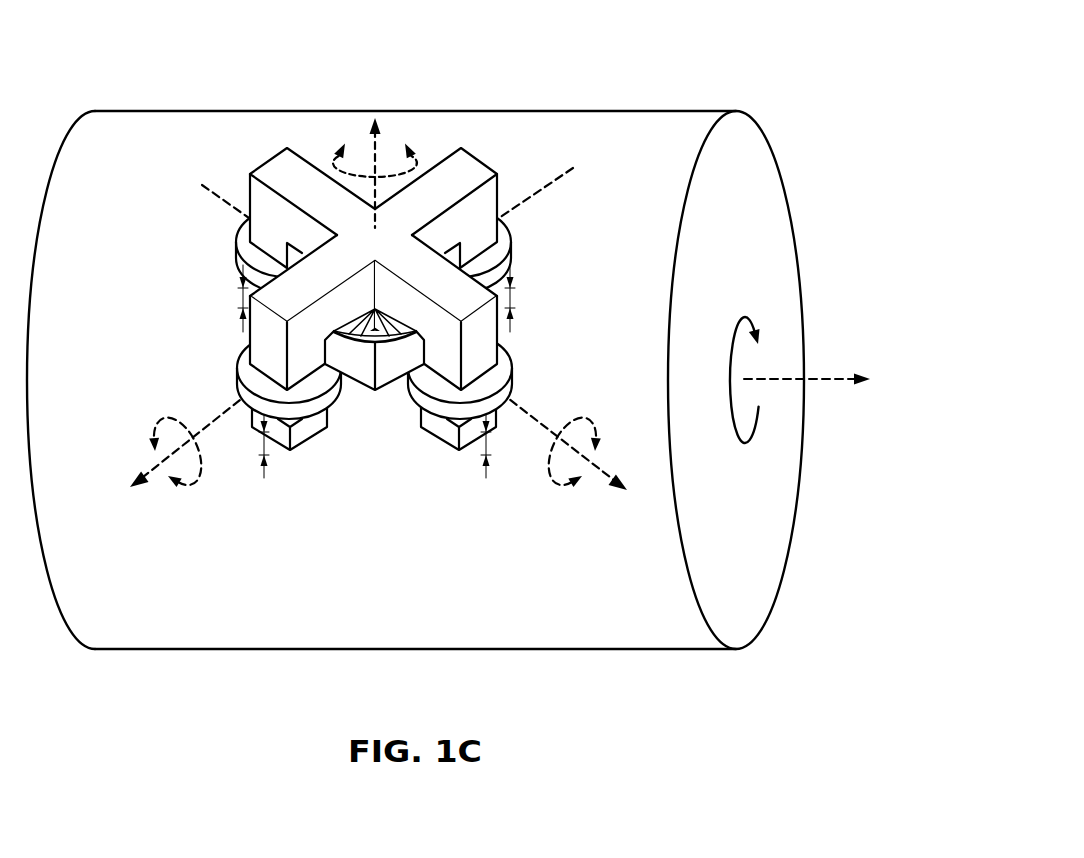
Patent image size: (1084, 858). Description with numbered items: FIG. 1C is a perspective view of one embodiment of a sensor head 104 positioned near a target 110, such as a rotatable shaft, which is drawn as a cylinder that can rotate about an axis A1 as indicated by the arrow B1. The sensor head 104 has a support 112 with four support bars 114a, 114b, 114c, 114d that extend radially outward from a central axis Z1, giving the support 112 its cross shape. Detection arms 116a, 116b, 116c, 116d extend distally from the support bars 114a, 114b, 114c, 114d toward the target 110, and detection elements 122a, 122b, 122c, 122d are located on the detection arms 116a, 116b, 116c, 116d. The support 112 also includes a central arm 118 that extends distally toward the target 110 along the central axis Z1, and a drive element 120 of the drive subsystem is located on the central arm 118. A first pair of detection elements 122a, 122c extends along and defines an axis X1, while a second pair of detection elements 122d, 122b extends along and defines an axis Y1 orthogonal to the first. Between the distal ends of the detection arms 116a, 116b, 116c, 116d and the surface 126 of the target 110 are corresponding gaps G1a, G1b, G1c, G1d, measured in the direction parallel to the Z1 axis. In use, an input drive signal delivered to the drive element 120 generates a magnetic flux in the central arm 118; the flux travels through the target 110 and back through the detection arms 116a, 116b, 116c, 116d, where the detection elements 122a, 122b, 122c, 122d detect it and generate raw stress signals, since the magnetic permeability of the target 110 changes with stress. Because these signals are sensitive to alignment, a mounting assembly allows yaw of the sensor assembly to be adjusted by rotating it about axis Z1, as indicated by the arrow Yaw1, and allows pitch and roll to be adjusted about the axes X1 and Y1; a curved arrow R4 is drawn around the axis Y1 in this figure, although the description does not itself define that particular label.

The sensor head 104 is at (373, 276).
The target 110 is at (417, 347).
The support 112 is at (374, 186).
The support bar 114a is at (425, 205).
The support bar 114b is at (460, 300).
The support bar 114c is at (272, 297).
The support bar 114d is at (283, 172).
The detection arm 116a is at (490, 194).
The detection arm 116b is at (485, 350).
The detection arm 116c is at (260, 346).
The detection arm 116d is at (258, 201).
The central arm 118 is at (371, 376).
The drive element 120 is at (398, 350).
The detection element 122a is at (511, 240).
The detection element 122b is at (511, 387).
The detection element 122c is at (240, 387).
The detection element 122d is at (238, 250).
The surface 126 is at (577, 110).
The gap G1a is at (512, 290).
The gap G1b is at (488, 458).
The gap G1c is at (268, 448).
The gap G1d is at (240, 300).
The central axis Z1 is at (368, 145).
The yaw arrow Yaw1 is at (328, 147).
The axis X1 is at (150, 482).
The axis Y1 is at (593, 477).
The axis A1 is at (826, 380).
The arrow B1 is at (760, 340).
The rotation about Y1 axis R4 is at (608, 422).